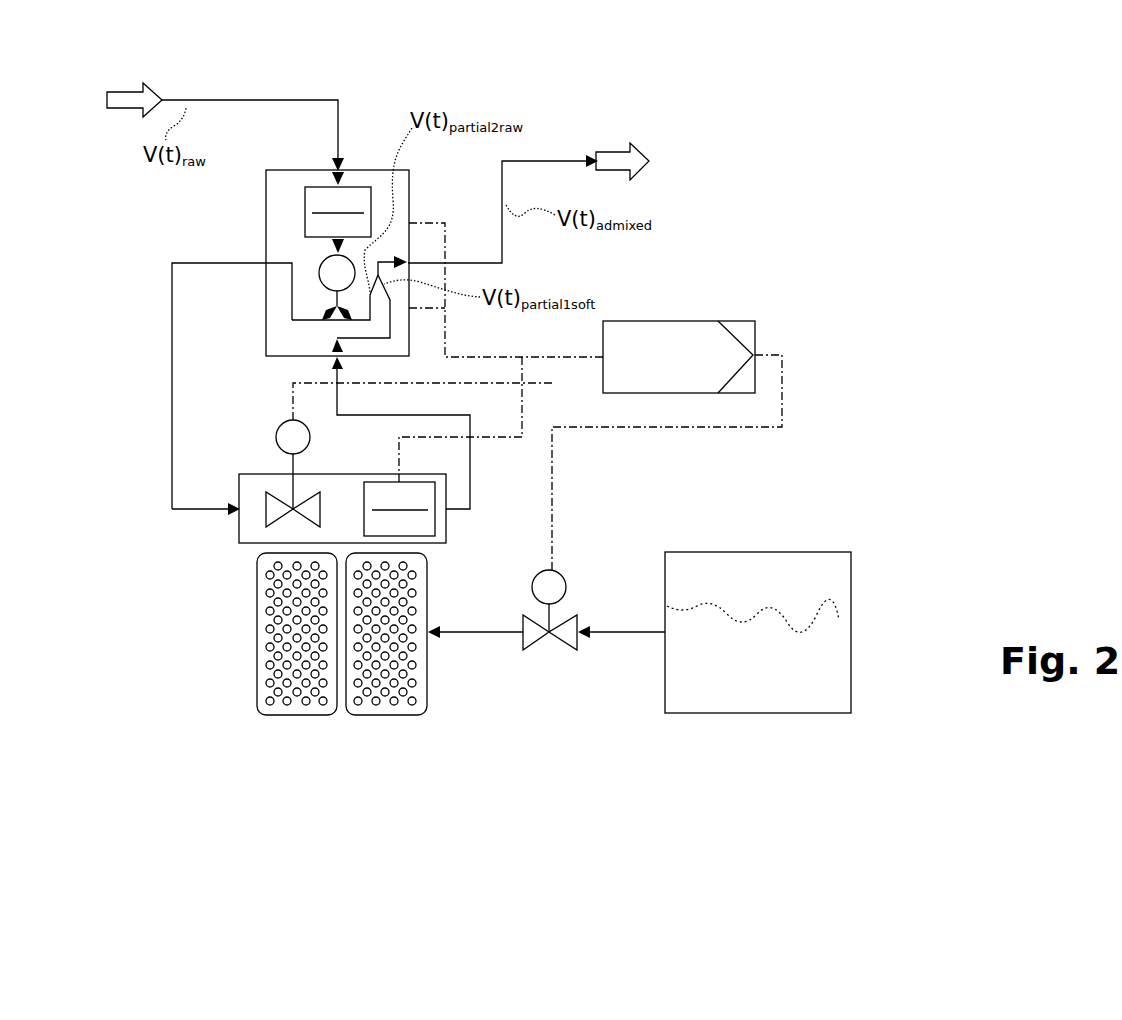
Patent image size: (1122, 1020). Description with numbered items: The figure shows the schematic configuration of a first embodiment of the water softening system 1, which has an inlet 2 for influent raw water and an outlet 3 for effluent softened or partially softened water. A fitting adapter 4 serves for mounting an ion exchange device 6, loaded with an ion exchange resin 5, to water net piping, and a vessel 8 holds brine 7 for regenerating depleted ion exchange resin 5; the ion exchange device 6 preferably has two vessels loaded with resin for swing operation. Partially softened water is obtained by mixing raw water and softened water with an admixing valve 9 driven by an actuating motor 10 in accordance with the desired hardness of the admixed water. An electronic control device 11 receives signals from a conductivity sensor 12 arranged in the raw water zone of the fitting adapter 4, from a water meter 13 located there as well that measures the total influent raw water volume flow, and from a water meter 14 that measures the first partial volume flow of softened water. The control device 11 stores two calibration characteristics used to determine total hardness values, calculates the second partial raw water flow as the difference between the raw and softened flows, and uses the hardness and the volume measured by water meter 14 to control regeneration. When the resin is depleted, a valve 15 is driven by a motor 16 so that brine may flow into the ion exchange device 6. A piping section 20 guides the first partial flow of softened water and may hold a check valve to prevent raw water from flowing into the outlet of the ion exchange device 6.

The water softening system 1 is at (109, 719).
The inlet 2 is at (340, 100).
The outlet 3 is at (546, 159).
The fitting adapter 4 is at (266, 210).
The ion exchange resin 5 is at (260, 676).
The ion exchange device 6 is at (256, 622).
The brine 7 is at (842, 656).
The vessel 8 is at (852, 568).
The admixing valve 9 is at (260, 534).
The actuating motor 10 is at (274, 445).
The electronic control device 11 is at (757, 321).
The conductivity sensor 12 is at (317, 272).
The water meter 13 is at (305, 187).
The water meter 14 is at (438, 525).
The valve 15 is at (578, 645).
The motor 16 is at (567, 582).
The piping section 20 is at (391, 318).